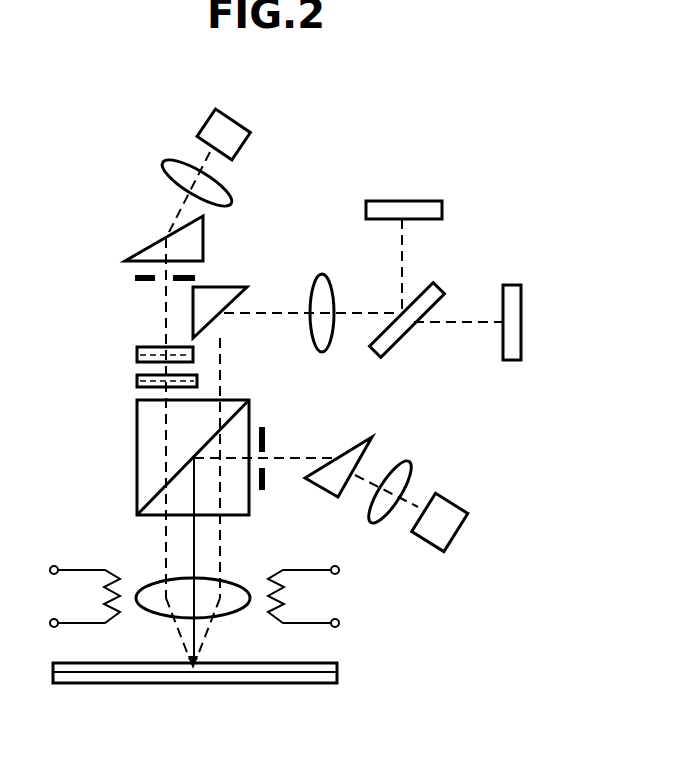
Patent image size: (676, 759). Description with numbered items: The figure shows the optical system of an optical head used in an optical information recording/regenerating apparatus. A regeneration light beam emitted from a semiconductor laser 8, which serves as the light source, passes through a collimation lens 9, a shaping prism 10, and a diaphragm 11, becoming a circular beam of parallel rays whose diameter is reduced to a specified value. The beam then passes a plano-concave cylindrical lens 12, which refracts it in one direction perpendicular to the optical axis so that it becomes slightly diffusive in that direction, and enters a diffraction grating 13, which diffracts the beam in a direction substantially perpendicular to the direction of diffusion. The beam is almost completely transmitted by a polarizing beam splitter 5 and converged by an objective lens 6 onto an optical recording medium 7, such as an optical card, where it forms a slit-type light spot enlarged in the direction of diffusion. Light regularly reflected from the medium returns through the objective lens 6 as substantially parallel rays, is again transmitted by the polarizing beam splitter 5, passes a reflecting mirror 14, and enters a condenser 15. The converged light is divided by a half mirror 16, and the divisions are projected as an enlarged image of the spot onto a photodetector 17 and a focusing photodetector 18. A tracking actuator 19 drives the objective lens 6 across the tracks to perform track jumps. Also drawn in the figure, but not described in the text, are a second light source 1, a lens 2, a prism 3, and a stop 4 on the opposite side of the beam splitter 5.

The light source 1 is at (453, 497).
The collimator lens 2 is at (410, 462).
The prism 3 is at (348, 442).
The aperture stop 4 is at (267, 437).
The polarizing beam splitter 5 is at (137, 433).
The objective lens 6 is at (240, 588).
The optical recording medium 7 is at (88, 663).
The semiconductor laser 8 is at (205, 117).
The collimation lens 9 is at (170, 165).
The shaping prism 10 is at (145, 251).
The diaphragm 11 is at (135, 278).
The plano-concave cylindrical lens 12 is at (137, 350).
The diffraction grating 13 is at (137, 382).
The reflecting mirror 14 is at (221, 287).
The condenser 15 is at (316, 275).
The half mirror 16 is at (440, 282).
The photodetector 17 is at (521, 297).
The focusing photodetector 18 is at (418, 200).
The tracking actuator 19 is at (83, 570).